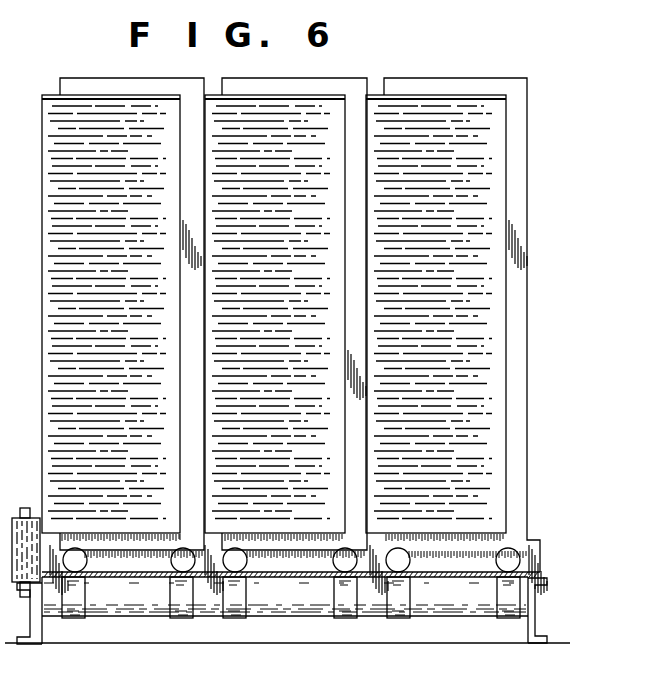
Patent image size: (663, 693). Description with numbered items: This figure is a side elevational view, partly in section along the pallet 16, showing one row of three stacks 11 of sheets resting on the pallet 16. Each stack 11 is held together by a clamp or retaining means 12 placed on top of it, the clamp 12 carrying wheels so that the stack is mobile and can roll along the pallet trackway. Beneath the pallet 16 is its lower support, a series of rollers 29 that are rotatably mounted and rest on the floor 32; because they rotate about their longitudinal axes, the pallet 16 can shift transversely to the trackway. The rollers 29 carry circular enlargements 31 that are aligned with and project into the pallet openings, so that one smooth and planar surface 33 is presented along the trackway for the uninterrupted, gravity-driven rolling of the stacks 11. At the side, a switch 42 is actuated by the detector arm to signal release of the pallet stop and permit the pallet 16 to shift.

The stack of sheets 11 is at (447, 120).
The clamp or retaining means 12 is at (240, 82).
The pallet 16 is at (438, 580).
The rollers 29 is at (208, 611).
The circular enlargements 31 is at (182, 612).
The floor 32 is at (67, 643).
The planar surface 33 is at (137, 573).
The switch 42 is at (2, 276).